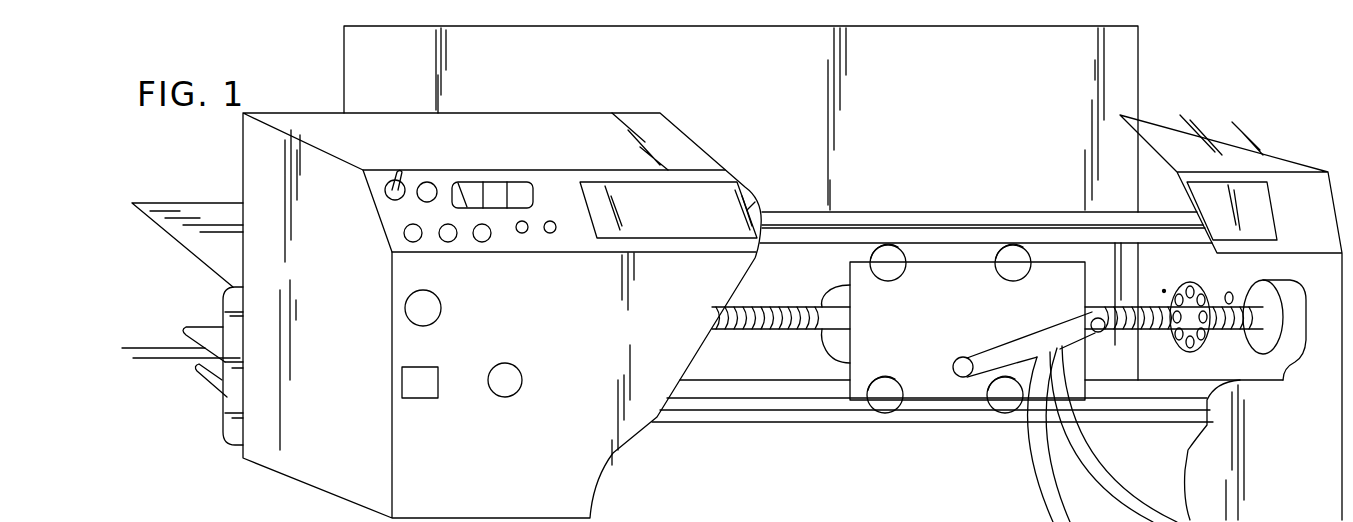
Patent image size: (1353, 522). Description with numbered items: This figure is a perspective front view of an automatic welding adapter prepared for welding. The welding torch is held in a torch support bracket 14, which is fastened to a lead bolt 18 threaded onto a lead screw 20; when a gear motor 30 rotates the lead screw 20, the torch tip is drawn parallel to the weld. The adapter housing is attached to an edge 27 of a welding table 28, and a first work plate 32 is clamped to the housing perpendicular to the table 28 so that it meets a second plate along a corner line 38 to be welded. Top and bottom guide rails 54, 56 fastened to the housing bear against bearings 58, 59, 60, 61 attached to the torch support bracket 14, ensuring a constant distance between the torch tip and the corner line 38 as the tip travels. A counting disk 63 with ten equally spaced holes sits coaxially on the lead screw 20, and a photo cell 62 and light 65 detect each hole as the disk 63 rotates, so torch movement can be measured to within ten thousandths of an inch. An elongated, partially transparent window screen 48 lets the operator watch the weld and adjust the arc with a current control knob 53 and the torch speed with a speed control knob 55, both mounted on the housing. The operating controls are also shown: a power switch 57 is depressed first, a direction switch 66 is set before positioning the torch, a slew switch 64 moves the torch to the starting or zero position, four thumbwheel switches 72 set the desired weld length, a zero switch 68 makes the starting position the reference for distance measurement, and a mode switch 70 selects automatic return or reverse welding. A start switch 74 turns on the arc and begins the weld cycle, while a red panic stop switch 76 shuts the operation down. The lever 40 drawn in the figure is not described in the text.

The torch support bracket 14 is at (850, 366).
The lead bolt 18 is at (834, 343).
The lead screw 20 is at (772, 330).
The edge of welding table 27 is at (168, 358).
The welding table 28 is at (146, 328).
The gear motor 30 is at (1298, 325).
The first work plate 32 is at (365, 58).
The corner line 38 is at (718, 381).
The hand lever 40 is at (1090, 330).
The window screen 48 is at (764, 192).
The current control knob 53 is at (432, 292).
The top guide rail 54 is at (824, 244).
The speed control knob 55 is at (515, 388).
The bottom guide rail 56 is at (951, 411).
The power switch 57 is at (438, 385).
The bearing 58 is at (900, 274).
The bearing 59 is at (1020, 274).
The bearing 60 is at (890, 411).
The bearing 61 is at (1008, 404).
The photo cell 62 is at (1170, 290).
The counting disk 63 is at (1197, 351).
The slew switch 64 is at (427, 182).
The light 65 is at (1230, 291).
The direction switch 66 is at (385, 192).
The zero switch 68 is at (404, 233).
The mode switch 70 is at (486, 243).
The thumbwheel switches 72 is at (509, 152).
The start switch 74 is at (526, 235).
The stop switch 76 is at (550, 221).